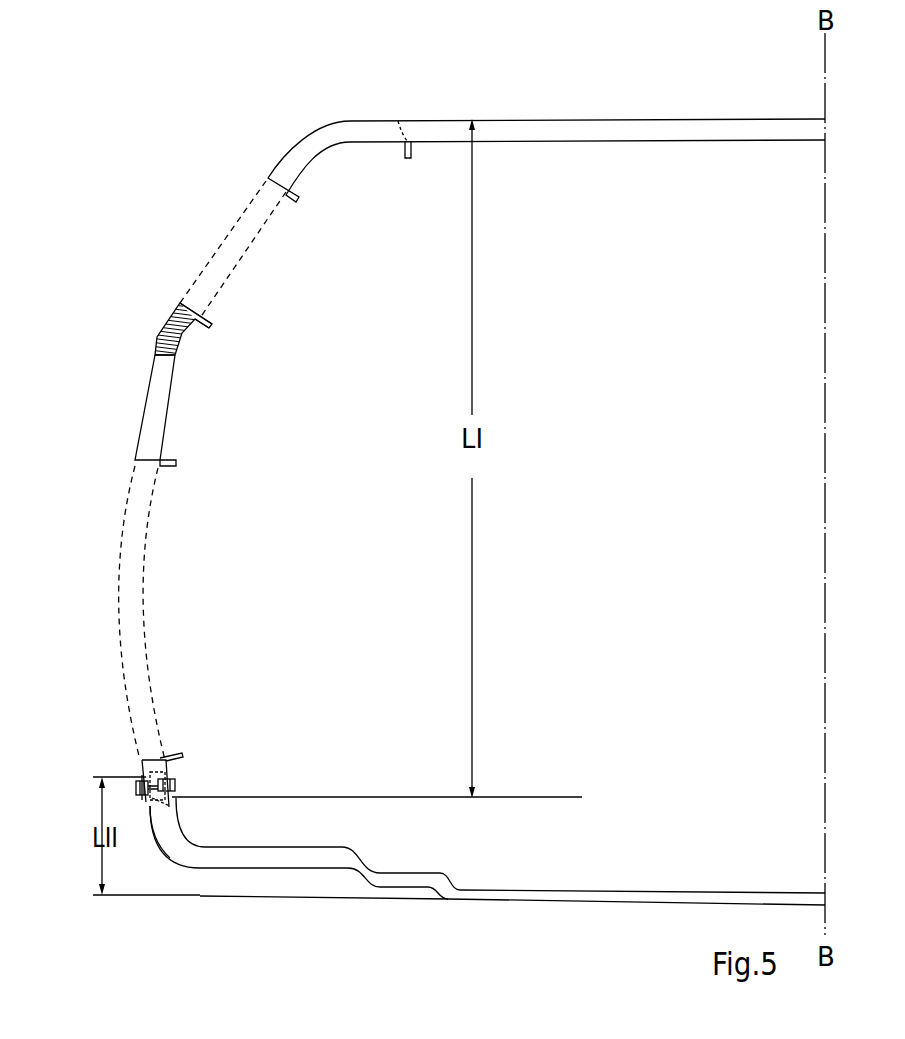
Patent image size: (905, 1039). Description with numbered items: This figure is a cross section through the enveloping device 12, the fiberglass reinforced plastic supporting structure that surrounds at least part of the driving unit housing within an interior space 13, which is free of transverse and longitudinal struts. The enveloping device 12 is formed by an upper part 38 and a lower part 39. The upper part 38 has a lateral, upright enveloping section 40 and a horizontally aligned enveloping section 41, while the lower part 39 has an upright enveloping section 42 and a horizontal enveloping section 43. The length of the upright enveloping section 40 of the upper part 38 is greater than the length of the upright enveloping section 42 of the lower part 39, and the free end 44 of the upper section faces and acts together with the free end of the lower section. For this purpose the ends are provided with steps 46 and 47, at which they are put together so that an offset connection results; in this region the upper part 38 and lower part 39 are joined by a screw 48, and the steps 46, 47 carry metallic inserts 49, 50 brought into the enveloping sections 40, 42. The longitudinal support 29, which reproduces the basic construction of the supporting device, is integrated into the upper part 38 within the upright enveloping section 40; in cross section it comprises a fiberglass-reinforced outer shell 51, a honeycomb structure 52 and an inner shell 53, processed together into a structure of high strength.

The enveloping device 12 is at (273, 160).
The interior space 13 is at (341, 488).
The longitudinal support 29 is at (170, 326).
The upper part 38 is at (372, 116).
The lower part 39 is at (265, 870).
The upright enveloping section 40 is at (148, 395).
The horizontally aligned enveloping section 41 is at (530, 118).
The upright enveloping section 42 is at (178, 825).
The horizontal enveloping section 43 is at (336, 850).
The first free end 44 is at (152, 812).
The step 46 is at (177, 789).
The step 47 is at (151, 799).
The screw 48 is at (140, 780).
The metallic insert 49 is at (152, 760).
The metallic insert 50 is at (161, 804).
The fiberglass-reinforced outer shell 51 is at (182, 308).
The honeycomb structure 52 is at (176, 358).
The inner shell 53 is at (189, 334).